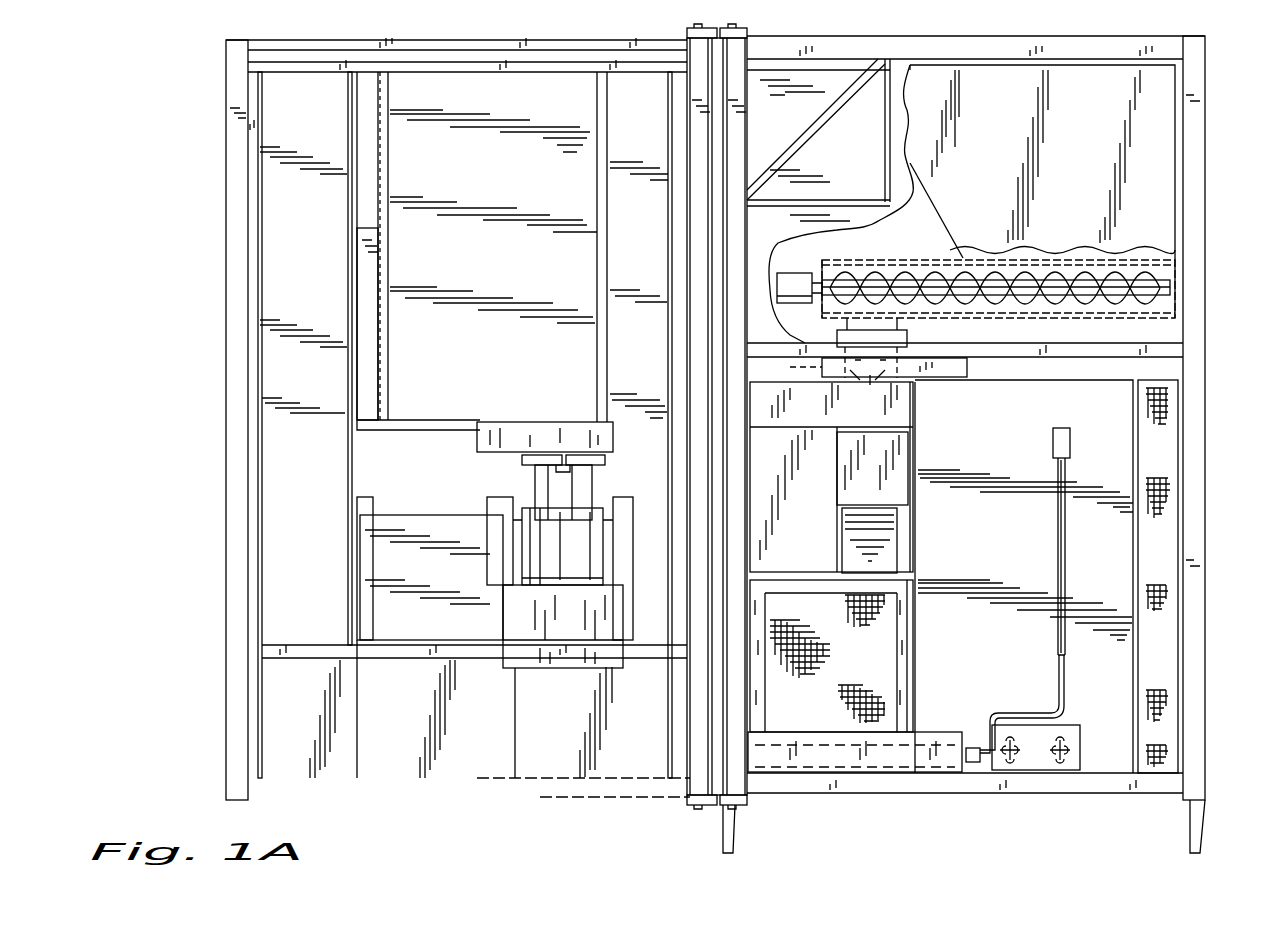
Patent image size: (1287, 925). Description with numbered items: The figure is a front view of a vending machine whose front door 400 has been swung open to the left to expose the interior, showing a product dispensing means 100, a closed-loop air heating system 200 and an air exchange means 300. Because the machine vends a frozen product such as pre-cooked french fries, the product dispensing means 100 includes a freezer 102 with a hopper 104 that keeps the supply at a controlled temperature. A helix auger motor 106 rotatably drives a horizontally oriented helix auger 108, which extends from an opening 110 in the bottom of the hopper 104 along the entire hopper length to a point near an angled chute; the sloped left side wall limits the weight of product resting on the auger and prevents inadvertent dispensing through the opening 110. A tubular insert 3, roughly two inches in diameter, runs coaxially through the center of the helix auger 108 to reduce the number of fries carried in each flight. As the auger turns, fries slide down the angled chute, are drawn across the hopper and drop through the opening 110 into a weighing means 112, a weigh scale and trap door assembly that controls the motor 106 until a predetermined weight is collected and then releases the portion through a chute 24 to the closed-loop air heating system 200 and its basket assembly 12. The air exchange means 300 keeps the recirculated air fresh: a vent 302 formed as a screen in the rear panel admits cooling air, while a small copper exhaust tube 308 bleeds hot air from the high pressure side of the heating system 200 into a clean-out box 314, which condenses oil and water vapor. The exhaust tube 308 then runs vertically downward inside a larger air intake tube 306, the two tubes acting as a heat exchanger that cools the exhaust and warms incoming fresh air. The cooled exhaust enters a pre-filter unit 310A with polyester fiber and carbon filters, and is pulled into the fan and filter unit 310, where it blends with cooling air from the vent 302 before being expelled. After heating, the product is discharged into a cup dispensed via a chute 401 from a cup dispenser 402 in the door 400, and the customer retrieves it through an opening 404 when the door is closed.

The tubular insert 3 is at (937, 270).
The basket assembly 12 is at (915, 452).
The chute 24 is at (830, 366).
The product dispensing means 100 is at (760, 322).
The freezer 102 is at (903, 55).
The hopper 104 is at (1175, 135).
The helix auger motor 106 is at (798, 273).
The helix auger 108 is at (898, 262).
The opening 110 is at (897, 322).
The weighing means 112 is at (967, 365).
The closed-loop air heating system 200 is at (1118, 458).
The air exchange means 300 is at (795, 775).
The vent 302 is at (1165, 550).
The air intake tube 306 is at (1055, 550).
The exhaust tube 308 is at (1062, 703).
The fan and filter unit 310 is at (913, 643).
The pre-filter unit 310A is at (967, 770).
The clean-out box 314 is at (1065, 428).
The front door 400 is at (227, 692).
The chute 401 is at (592, 483).
The cup dispenser 402 is at (610, 215).
The opening 404 is at (523, 560).